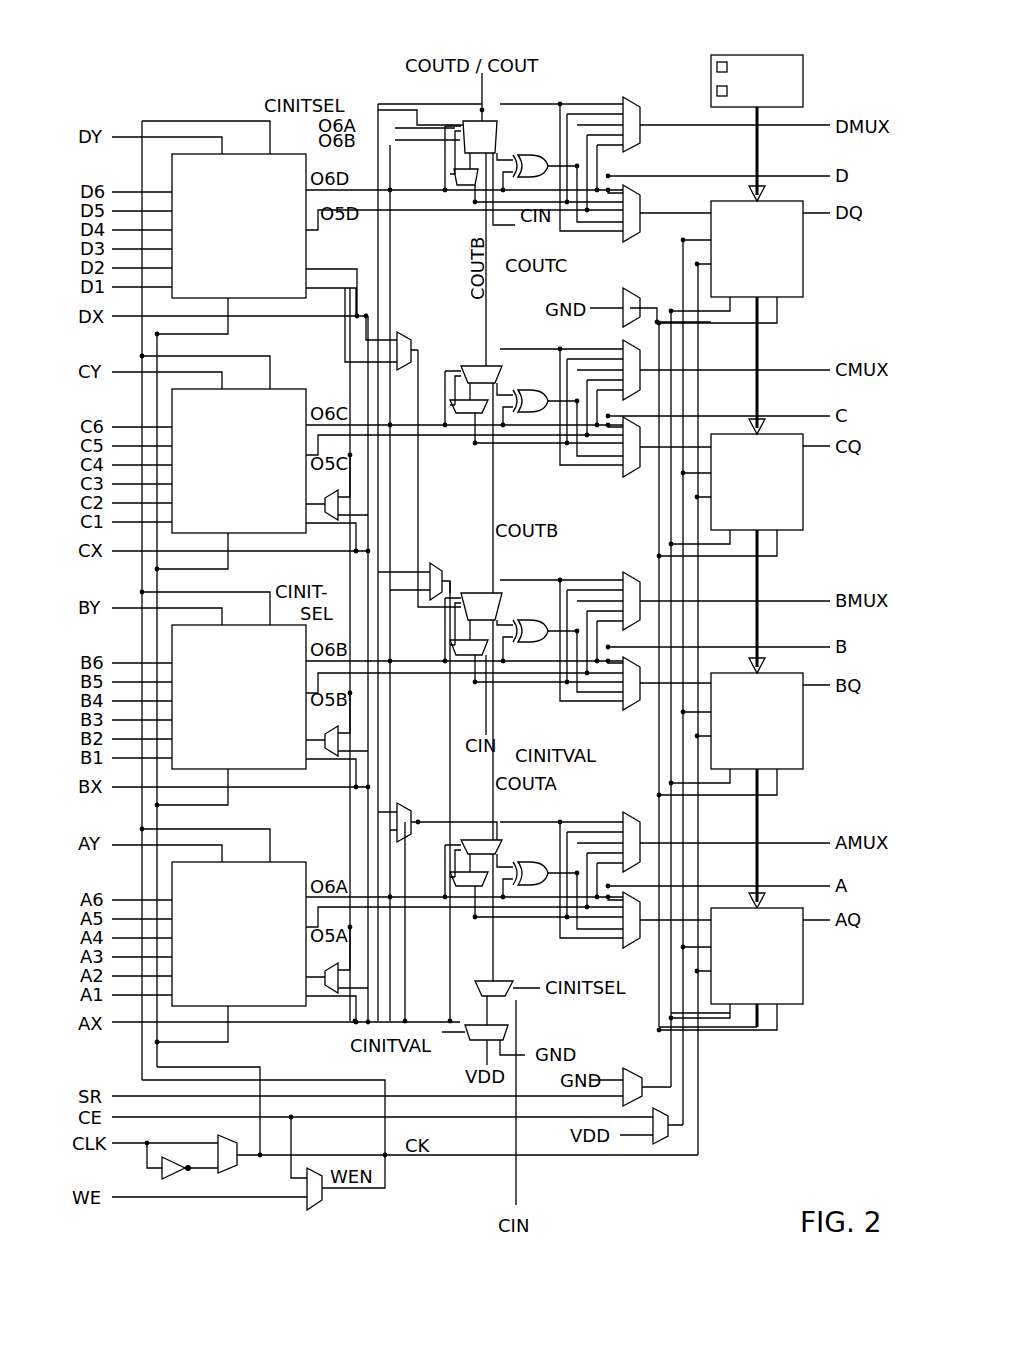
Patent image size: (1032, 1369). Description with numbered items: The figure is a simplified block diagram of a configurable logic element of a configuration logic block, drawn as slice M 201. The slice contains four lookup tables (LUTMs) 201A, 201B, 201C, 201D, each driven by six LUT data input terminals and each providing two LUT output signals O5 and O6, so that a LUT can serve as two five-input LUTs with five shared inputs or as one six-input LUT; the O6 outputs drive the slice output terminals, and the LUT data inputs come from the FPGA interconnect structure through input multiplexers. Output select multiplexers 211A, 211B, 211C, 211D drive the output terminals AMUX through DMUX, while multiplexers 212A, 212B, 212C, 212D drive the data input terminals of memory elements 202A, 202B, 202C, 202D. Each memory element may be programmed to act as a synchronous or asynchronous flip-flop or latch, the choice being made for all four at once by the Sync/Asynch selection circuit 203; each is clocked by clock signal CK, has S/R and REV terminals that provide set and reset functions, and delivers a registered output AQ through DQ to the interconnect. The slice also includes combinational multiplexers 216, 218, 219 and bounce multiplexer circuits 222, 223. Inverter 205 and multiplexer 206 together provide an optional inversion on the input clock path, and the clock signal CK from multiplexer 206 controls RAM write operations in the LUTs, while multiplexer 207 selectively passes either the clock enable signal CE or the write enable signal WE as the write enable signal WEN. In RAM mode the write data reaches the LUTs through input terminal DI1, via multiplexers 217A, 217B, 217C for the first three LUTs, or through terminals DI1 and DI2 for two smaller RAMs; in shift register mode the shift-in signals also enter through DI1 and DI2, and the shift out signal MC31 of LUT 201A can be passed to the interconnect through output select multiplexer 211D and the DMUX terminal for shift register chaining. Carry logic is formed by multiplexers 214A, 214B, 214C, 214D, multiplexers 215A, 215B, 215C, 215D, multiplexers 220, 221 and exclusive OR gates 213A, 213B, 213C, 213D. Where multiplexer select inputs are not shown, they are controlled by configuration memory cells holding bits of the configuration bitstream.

The slice M 201 is at (200, 106).
The lookup table (LUTM) 201A is at (239, 934).
The lookup table (LUTM) 201B is at (239, 697).
The lookup table (LUTM) 201C is at (239, 461).
The lookup table (LUTM) 201D is at (239, 226).
The memory element 202A is at (757, 956).
The memory element 202B is at (757, 721).
The memory element 202C is at (757, 482).
The memory element 202D is at (757, 249).
The Sync/Asynch selection circuit 203 is at (711, 95).
The inverter 205 is at (172, 1178).
The multiplexer 206 is at (232, 1170).
The multiplexer 207 is at (315, 1204).
The output select multiplexer 211A is at (618, 812).
The output select multiplexer 211B is at (618, 572).
The output select multiplexer 211C is at (618, 340).
The output select multiplexer 211D is at (640, 140).
The multiplexer 212A is at (632, 948).
The multiplexer 212B is at (632, 710).
The multiplexer 212C is at (632, 477).
The multiplexer 212D is at (638, 205).
The exclusive OR gate 213A is at (530, 862).
The exclusive OR gate 213B is at (530, 620).
The exclusive OR gate 213C is at (530, 390).
The exclusive OR gate 213D is at (530, 155).
The carry logic multiplexer 214A is at (468, 840).
The carry logic multiplexer 214B is at (468, 593).
The carry logic multiplexer 214C is at (468, 366).
The carry logic multiplexer 214D is at (515, 104).
The carry logic multiplexer 215A is at (478, 886).
The carry logic multiplexer 215B is at (478, 655).
The carry logic multiplexer 215C is at (478, 413).
The carry logic multiplexer 215D is at (458, 185).
The combinational multiplexer 216 is at (405, 332).
The multiplexer 217A is at (330, 993).
The multiplexer 217B is at (330, 756).
The multiplexer 217C is at (330, 520).
The combinational multiplexer 218 is at (430, 578).
The combinational multiplexer 219 is at (408, 842).
The carry logic multiplexer 220 is at (508, 1027).
The carry logic multiplexer 221 is at (630, 290).
The bounce multiplexer circuit 222 is at (626, 1070).
The bounce multiplexer circuit 223 is at (658, 1144).